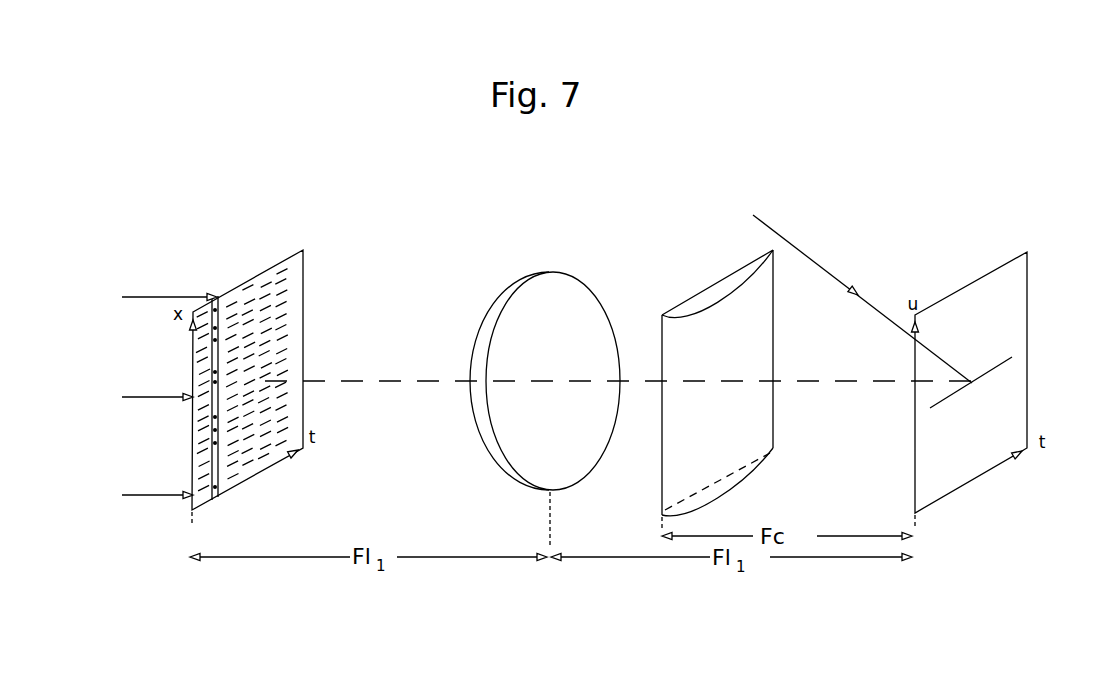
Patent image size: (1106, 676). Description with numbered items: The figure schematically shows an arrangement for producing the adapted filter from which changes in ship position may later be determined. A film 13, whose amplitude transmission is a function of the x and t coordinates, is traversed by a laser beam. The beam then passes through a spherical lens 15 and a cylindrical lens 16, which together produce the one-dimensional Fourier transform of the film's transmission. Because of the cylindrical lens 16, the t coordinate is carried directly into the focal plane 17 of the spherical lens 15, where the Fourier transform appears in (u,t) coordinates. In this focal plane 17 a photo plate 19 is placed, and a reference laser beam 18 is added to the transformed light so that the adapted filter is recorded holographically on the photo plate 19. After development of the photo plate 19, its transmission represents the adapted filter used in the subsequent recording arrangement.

The film 13 is at (303, 250).
The spherical lens 15 is at (547, 280).
The cylindrical lens 16 is at (722, 283).
The focal plane 17 is at (990, 278).
The reference laser beam 18 is at (802, 250).
The photo plate 19 is at (1023, 304).